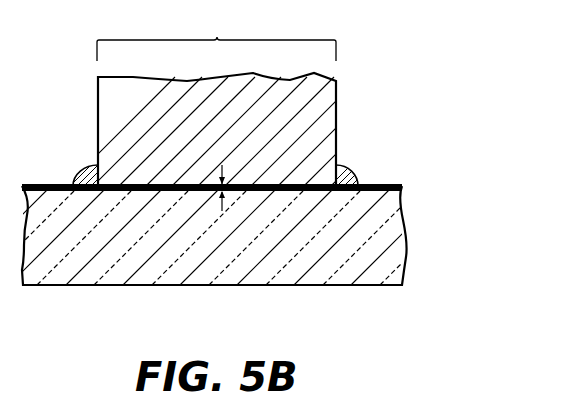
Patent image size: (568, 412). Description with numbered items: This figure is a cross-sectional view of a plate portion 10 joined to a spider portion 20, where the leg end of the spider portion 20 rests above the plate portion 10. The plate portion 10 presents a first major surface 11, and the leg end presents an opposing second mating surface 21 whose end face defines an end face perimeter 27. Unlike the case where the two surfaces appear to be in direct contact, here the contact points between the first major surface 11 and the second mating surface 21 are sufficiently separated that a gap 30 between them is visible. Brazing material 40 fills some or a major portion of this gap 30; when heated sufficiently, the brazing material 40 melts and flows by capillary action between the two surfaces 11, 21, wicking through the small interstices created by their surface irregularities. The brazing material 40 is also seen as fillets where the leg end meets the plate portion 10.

The plate portion 10 is at (386, 237).
The first major surface 11 is at (383, 186).
The spider portion 20 is at (320, 115).
The second mating surface 21 is at (280, 190).
The end face perimeter 27 is at (216, 35).
The gap 30 is at (222, 167).
The brazing material 40 is at (84, 170).